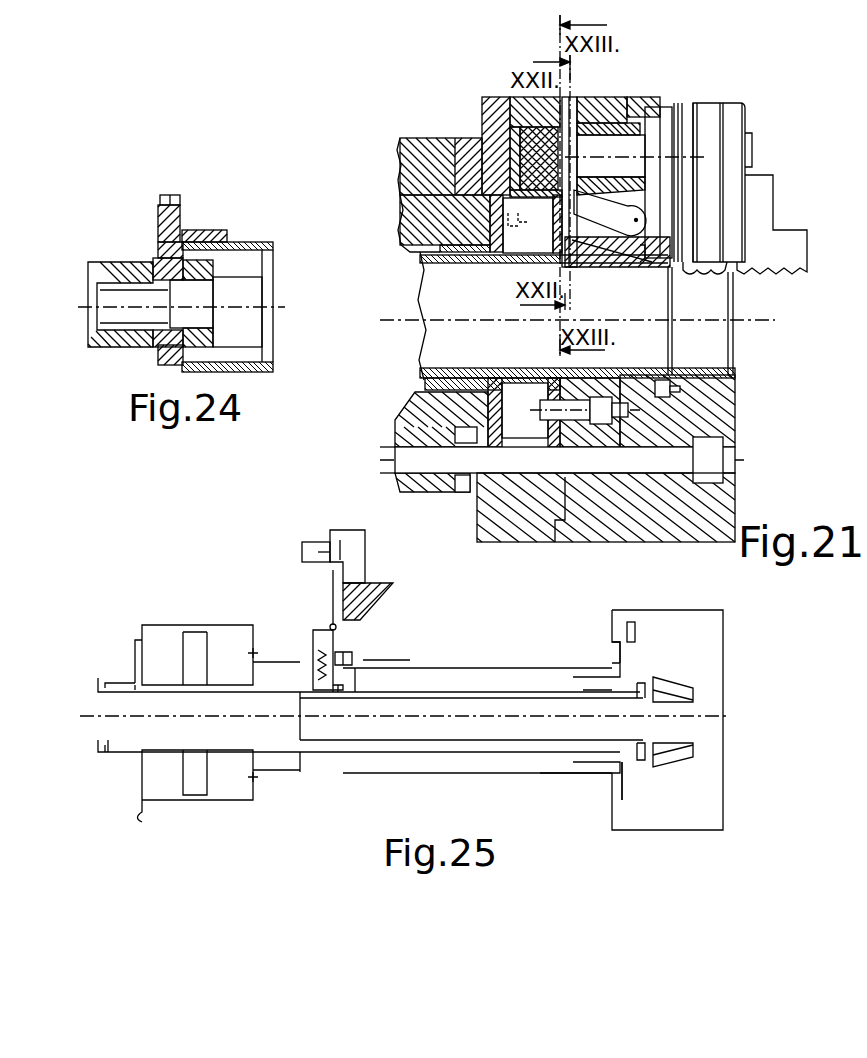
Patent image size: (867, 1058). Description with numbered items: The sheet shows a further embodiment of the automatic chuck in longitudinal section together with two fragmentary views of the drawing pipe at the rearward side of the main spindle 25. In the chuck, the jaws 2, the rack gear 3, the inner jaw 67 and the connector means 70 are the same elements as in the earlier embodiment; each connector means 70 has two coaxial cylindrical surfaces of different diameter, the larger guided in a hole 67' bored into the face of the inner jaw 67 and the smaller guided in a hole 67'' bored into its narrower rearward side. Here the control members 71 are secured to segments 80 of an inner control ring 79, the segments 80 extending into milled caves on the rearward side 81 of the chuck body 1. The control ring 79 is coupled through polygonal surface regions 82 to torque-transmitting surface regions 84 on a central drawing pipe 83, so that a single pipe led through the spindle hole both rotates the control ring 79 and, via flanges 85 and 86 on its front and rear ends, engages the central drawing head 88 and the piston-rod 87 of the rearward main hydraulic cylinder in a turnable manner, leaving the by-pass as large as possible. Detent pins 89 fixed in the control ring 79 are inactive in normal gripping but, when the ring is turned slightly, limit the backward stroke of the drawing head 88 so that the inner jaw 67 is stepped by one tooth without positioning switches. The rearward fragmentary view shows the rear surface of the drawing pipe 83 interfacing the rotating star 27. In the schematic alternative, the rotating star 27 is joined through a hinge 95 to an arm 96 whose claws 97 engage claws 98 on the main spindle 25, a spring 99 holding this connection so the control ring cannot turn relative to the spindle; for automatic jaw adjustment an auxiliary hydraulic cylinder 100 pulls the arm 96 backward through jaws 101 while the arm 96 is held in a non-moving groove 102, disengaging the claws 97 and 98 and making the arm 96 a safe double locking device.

In FIG. 21, the chuck body 1 is at (732, 420).
In FIG. 21, the jaws 2 is at (742, 120).
In FIG. 21, the rack gear 3 is at (748, 146).
In FIG. 21, the main spindle 25 is at (400, 420).
In FIG. 25, the main spindle 25 is at (513, 773).
In FIG. 24, the rotating star 27 is at (158, 226).
In FIG. 25, the rotating star 27 is at (313, 640).
In FIG. 21, the inner jaw 67 is at (630, 125).
In FIG. 21, the hole 67' is at (658, 131).
In FIG. 21, the hole 67'' is at (636, 83).
In FIG. 21, the connector means 70 is at (660, 145).
In FIG. 21, the control members 71 is at (508, 145).
In FIG. 21, the control ring 79 is at (410, 196).
In FIG. 25, the control ring 79 is at (618, 656).
In FIG. 21, the segments 80 is at (476, 186).
In FIG. 25, the segments 80 is at (626, 632).
In FIG. 21, the rearward side 81 is at (486, 140).
In FIG. 21, the surface regions 82 is at (412, 243).
In FIG. 21, the central drawing pipe 83 is at (440, 262).
In FIG. 25, the central drawing pipe 83 is at (442, 696).
In FIG. 24, the surface regions 84 is at (254, 246).
In FIG. 21, the flange 85 is at (578, 273).
In FIG. 25, the flange 85 is at (622, 790).
In FIG. 24, the flange 86 is at (186, 245).
In FIG. 24, the piston-rod of the rearward main hydraulic cylinder 87 is at (127, 262).
In FIG. 21, the central drawing head 88 is at (650, 272).
In FIG. 25, the central drawing head 88 is at (675, 762).
In FIG. 21, the detent pins 89 is at (440, 172).
In FIG. 25, the hinge 95 is at (330, 626).
In FIG. 25, the arm 96 is at (333, 612).
In FIG. 25, the claws 97 is at (340, 690).
In FIG. 25, the claws 98 is at (354, 658).
In FIG. 25, the spring 99 is at (331, 688).
In FIG. 25, the auxiliary hydraulic cylinder 100 is at (336, 530).
In FIG. 25, the jaws 101 is at (320, 572).
In FIG. 25, the groove 102 is at (352, 598).